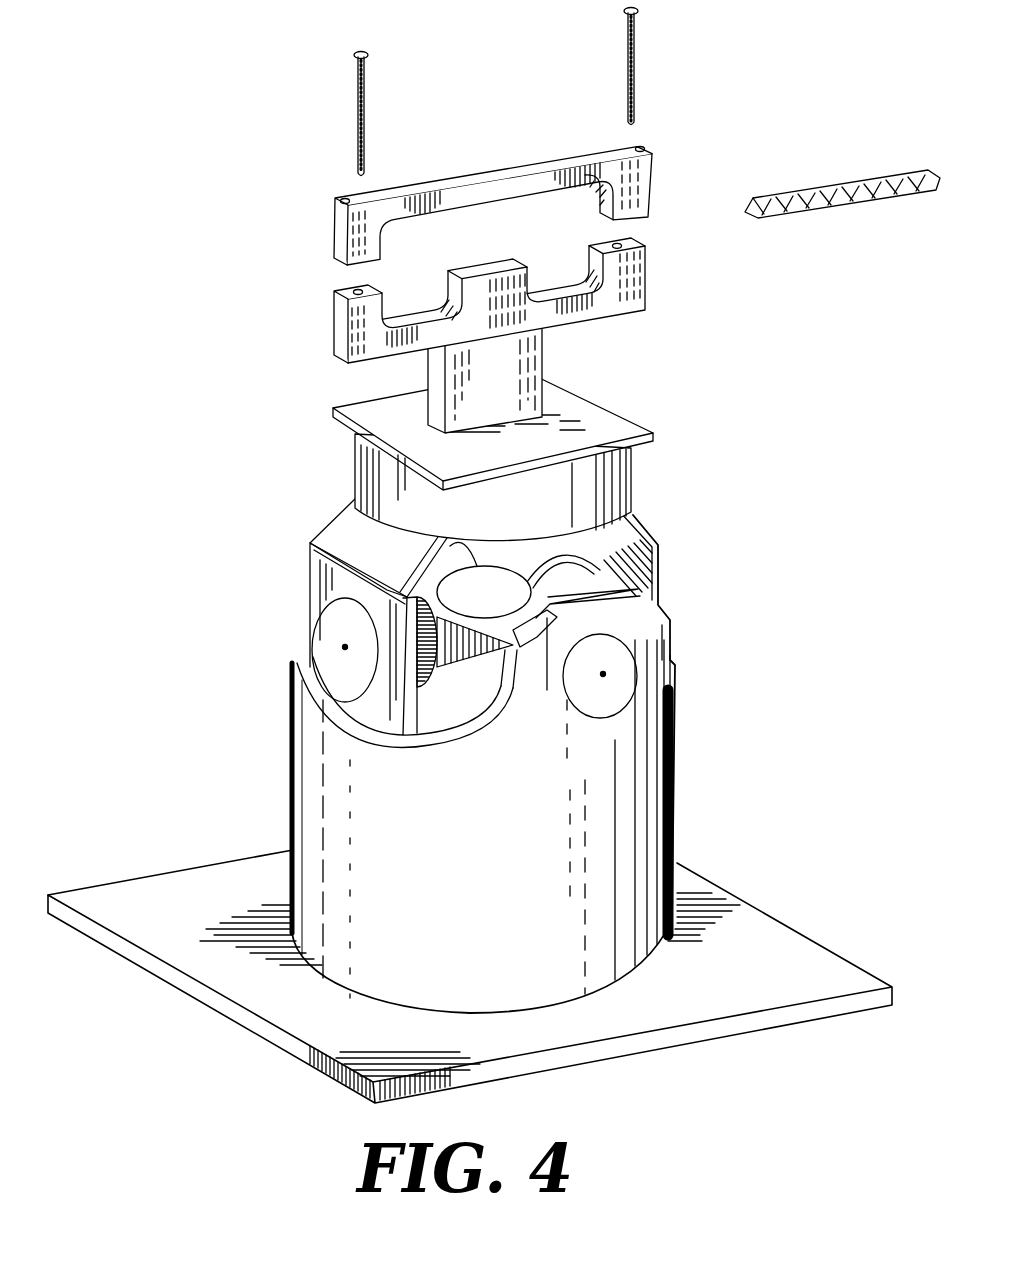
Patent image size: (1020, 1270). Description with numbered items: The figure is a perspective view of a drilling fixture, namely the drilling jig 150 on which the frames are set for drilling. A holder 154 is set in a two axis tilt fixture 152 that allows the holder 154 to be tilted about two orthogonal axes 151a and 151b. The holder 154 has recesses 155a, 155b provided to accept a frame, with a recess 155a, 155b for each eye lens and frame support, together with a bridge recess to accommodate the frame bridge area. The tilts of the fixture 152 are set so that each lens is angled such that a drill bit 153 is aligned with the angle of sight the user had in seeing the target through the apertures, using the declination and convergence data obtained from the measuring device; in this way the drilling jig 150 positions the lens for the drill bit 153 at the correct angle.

The drilling jig 150 is at (222, 133).
The orthogonal axis 151a is at (345, 647).
The orthogonal axis 151b is at (603, 675).
The two axis tilt fixture 152 is at (705, 443).
The drill bit 153 is at (868, 182).
The holder 154 is at (760, 72).
The recess 155a is at (572, 254).
The recess 155b is at (413, 266).